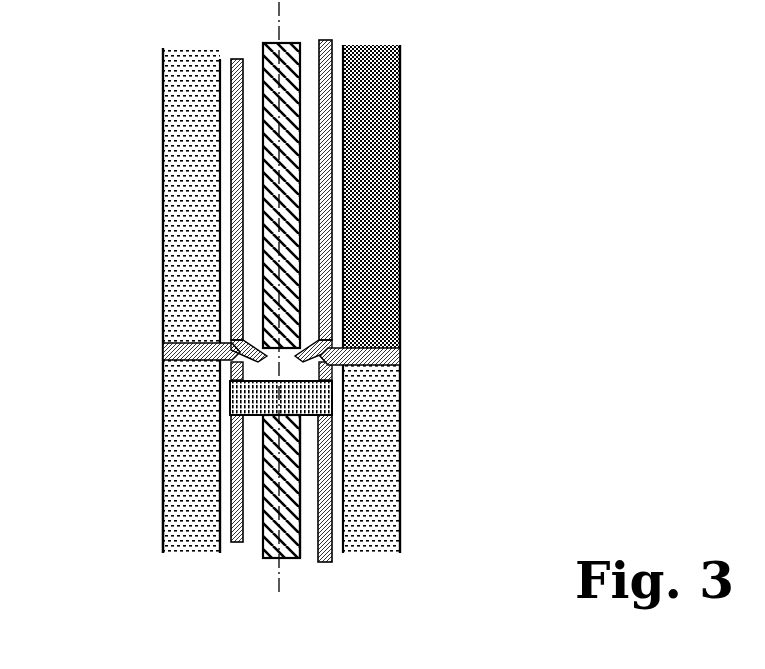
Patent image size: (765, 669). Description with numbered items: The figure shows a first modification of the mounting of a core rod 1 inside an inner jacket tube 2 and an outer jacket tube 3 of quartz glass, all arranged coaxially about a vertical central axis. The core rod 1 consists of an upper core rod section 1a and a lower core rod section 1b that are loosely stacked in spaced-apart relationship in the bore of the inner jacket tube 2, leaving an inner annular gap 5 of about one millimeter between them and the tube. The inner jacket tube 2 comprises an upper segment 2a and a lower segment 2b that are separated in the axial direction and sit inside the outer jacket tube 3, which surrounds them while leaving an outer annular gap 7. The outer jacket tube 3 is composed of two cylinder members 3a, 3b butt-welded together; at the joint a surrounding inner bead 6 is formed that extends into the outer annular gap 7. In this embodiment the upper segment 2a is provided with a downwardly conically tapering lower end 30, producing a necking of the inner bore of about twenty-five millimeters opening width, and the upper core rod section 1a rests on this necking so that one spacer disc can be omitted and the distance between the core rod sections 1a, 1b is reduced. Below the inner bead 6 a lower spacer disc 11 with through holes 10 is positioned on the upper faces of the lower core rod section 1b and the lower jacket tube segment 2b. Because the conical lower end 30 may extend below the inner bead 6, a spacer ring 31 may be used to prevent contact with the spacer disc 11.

The core rod 1 is at (258, 115).
The upper core rod section 1a is at (283, 133).
The lower core rod section 1b is at (265, 541).
The inner jacket tube 2 is at (229, 190).
The upper segment of the inner jacket tube 2a is at (330, 190).
The lower segment of the inner jacket tube 2b is at (322, 462).
The outer jacket tube 3 is at (158, 247).
The upper cylinder member 3a is at (372, 227).
The lower cylinder member 3b is at (358, 523).
The conical lower end 30 is at (253, 345).
The spacer ring 31 is at (330, 380).
The inner bead 6 is at (380, 347).
The lower spacer disc 11 is at (232, 400).
The through holes 10 is at (308, 400).
The inner annular gap 5 is at (250, 456).
The outer annular gap 7 is at (213, 478).